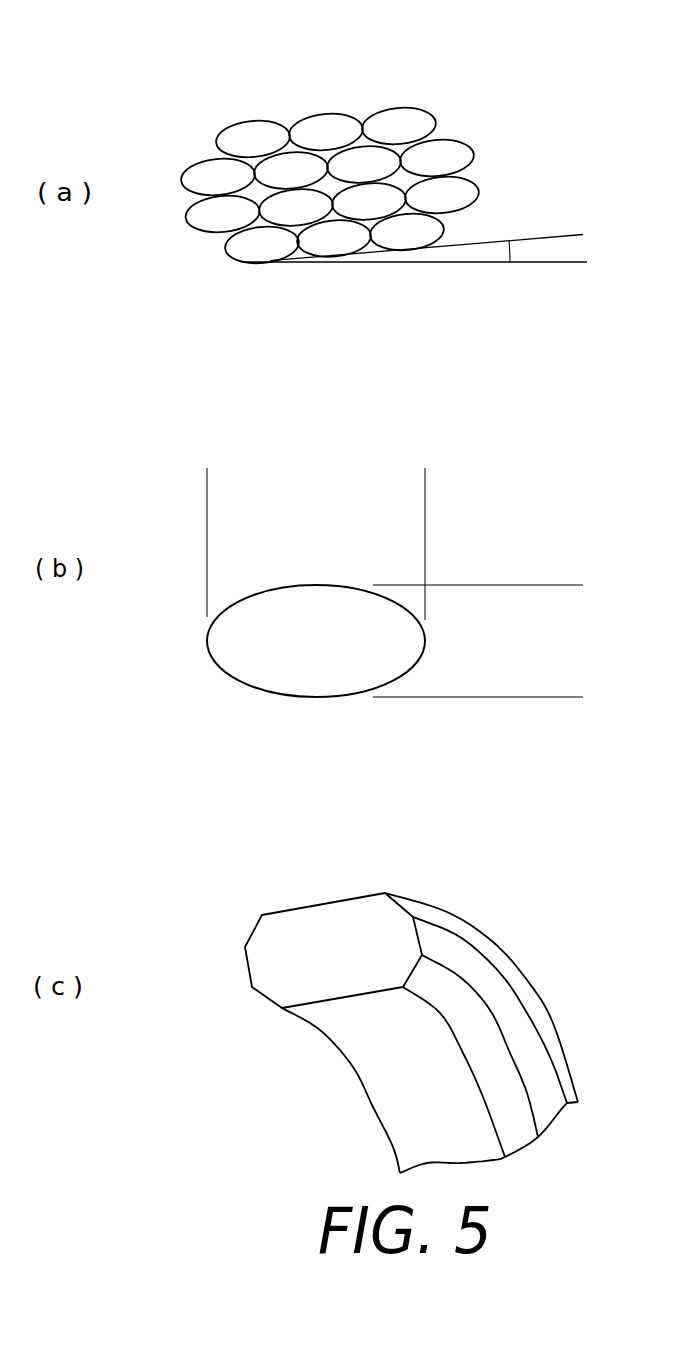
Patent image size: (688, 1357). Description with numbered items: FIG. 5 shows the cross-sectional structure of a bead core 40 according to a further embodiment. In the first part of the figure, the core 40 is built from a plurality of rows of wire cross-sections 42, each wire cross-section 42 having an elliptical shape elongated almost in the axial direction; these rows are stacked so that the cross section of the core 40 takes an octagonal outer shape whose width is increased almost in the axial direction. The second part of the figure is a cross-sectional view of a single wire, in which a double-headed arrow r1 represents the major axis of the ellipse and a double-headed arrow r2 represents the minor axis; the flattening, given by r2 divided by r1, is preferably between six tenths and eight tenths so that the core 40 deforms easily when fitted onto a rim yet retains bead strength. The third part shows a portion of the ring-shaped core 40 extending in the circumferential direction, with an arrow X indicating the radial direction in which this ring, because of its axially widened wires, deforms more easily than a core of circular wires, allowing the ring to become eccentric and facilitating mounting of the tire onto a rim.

The core 40 is at (243, 103).
The wire cross-section 42 is at (398, 120).
The major axis of the ellipse r1 is at (425, 475).
The minor axis of the ellipse r2 is at (575, 585).
The radial direction arrow X is at (203, 913).